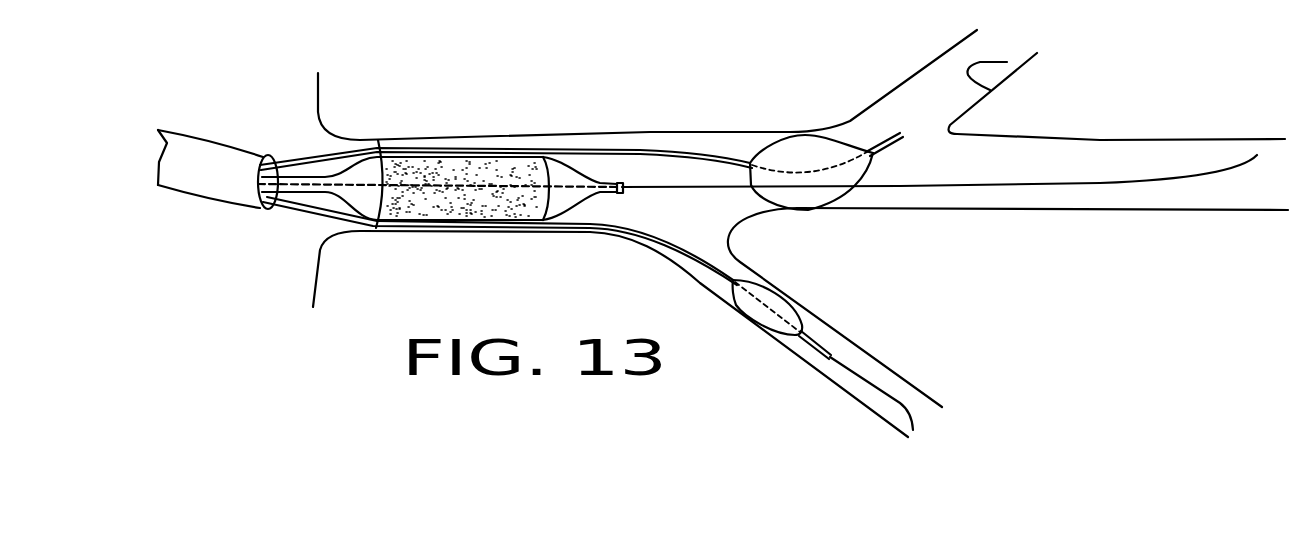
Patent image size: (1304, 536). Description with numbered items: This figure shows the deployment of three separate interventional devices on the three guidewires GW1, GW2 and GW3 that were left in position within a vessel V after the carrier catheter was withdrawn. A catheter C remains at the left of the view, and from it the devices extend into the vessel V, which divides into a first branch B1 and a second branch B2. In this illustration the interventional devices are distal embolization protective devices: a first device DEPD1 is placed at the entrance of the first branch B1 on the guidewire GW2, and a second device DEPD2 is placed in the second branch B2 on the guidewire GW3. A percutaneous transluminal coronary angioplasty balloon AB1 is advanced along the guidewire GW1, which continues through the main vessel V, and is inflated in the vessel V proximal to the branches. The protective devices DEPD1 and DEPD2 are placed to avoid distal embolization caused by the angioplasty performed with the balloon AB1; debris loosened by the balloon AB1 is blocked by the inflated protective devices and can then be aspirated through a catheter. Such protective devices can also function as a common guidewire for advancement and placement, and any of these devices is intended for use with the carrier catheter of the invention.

The guide catheter C is at (238, 150).
The PTCA balloon AB1 is at (504, 173).
The vessel V is at (723, 142).
The distal embolization protective device DEPD1 is at (798, 152).
The branch vessel 1 B1 is at (945, 67).
The guidewire GW2 is at (990, 90).
The guidewire GW1 is at (1135, 175).
The distal embolization protective device DEPD2 is at (780, 303).
The branch vessel 2 B2 is at (872, 370).
The guidewire GW3 is at (847, 370).